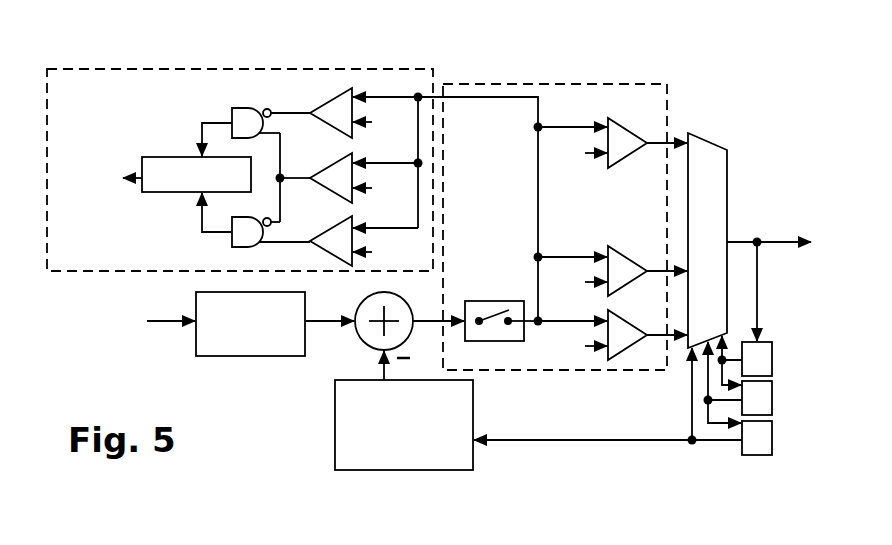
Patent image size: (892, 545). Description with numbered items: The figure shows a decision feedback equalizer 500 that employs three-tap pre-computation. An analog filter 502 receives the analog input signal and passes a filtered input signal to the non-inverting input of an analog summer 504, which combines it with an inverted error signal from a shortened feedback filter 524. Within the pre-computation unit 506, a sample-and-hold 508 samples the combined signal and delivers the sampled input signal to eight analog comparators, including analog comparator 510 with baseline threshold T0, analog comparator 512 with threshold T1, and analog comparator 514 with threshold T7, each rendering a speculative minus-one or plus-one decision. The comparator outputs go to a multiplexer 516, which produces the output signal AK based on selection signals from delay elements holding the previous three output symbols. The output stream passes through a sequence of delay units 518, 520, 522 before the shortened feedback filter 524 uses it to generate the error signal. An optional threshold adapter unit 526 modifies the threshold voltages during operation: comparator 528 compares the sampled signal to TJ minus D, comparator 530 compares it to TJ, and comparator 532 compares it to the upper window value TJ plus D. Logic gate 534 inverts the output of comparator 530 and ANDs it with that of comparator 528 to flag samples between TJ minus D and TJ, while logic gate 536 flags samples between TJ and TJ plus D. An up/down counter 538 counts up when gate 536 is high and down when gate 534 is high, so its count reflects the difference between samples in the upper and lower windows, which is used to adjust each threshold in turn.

The decision feedback equalizer 500 is at (537, 50).
The analog filter 502 is at (250, 357).
The analog summer 504 is at (368, 343).
The pre-computation unit 506 is at (497, 84).
The sample-and-hold 508 is at (497, 342).
The analog comparator 510 is at (616, 320).
The analog comparator 512 is at (616, 258).
The analog comparator 514 is at (616, 128).
The multiplexer 516 is at (728, 156).
The delay unit 518 is at (773, 360).
The delay unit 520 is at (773, 400).
The delay unit 522 is at (773, 438).
The shortened feedback filter 524 is at (384, 470).
The threshold adapter unit 526 is at (163, 68).
The comparator 528 is at (338, 228).
The comparator 530 is at (338, 163).
The comparator 532 is at (338, 98).
The logic gate 534 is at (232, 240).
The logic gate 536 is at (235, 108).
The up/down counter 538 is at (195, 156).